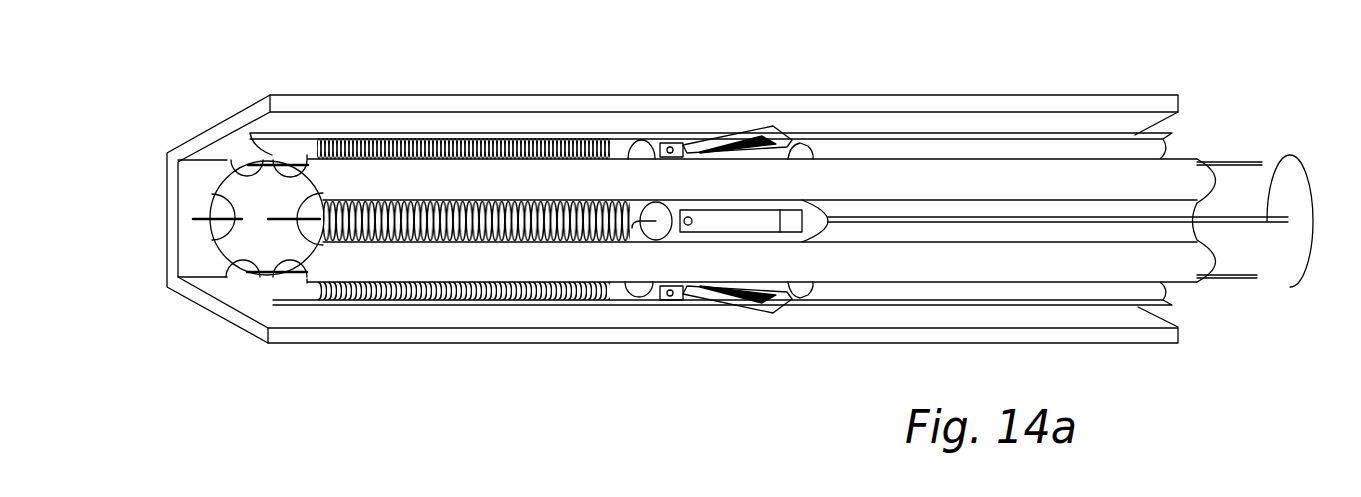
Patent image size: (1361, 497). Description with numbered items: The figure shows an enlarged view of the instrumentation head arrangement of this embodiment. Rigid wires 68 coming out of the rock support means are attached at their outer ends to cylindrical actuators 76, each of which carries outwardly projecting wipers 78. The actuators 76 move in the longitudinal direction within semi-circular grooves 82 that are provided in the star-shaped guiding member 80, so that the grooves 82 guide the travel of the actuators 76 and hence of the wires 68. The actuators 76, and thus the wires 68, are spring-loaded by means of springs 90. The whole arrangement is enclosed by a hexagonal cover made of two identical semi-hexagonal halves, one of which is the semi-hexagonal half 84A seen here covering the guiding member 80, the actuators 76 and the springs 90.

The rigid wires 68 is at (1257, 160).
The cylindrical actuators 76 is at (800, 147).
The wipers 78 is at (765, 132).
The star-shaped guiding member 80 is at (265, 297).
The semi-circular grooves 82 is at (288, 156).
The semi-hexagonal half 84A is at (502, 105).
The springs 90 is at (478, 290).